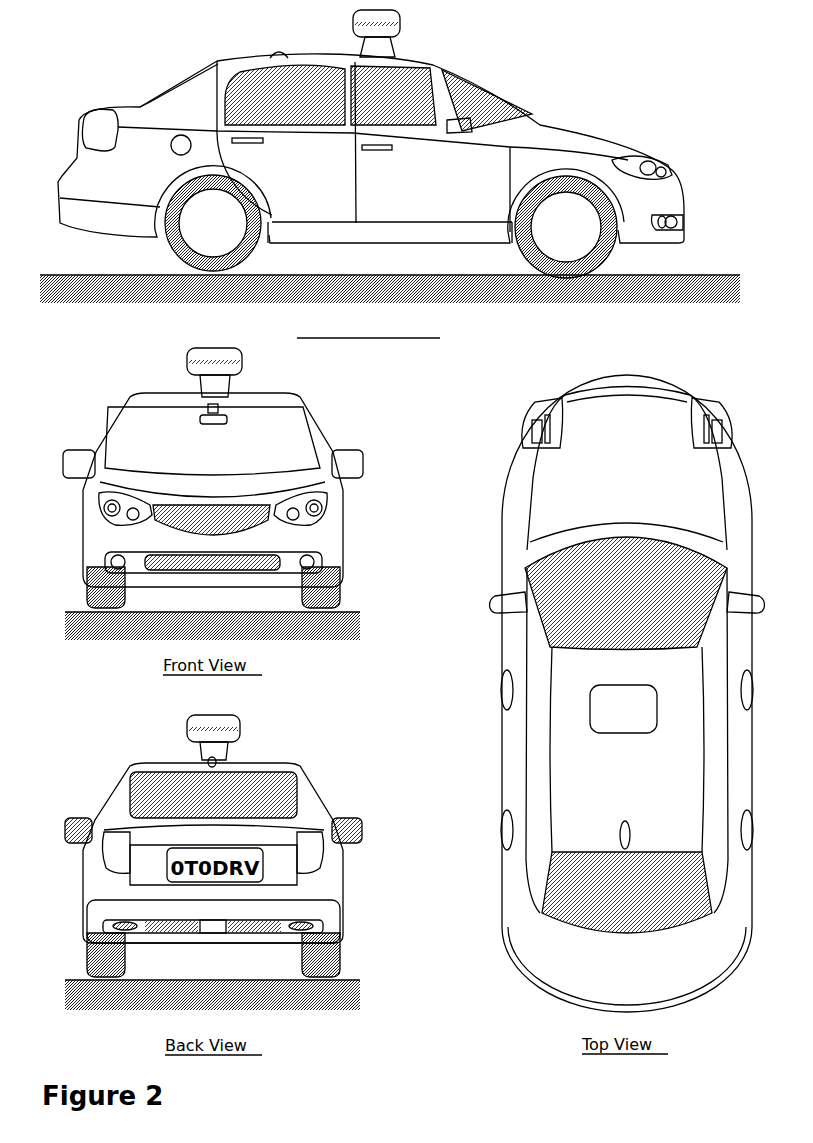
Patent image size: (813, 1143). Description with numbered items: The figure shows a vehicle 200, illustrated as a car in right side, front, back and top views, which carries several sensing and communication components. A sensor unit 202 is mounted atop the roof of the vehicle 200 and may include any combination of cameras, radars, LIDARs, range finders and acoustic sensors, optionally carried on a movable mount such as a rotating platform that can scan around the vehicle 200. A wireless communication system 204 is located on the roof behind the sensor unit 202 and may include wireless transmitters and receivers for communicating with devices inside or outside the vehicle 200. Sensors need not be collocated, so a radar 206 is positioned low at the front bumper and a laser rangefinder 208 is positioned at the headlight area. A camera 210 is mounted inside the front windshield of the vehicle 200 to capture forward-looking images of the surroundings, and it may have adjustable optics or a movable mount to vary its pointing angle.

The vehicle 200 is at (48, 94).
The sensor unit 202 is at (398, 30).
The wireless communication system 204 is at (278, 50).
The radar 206 is at (684, 220).
The laser rangefinder 208 is at (673, 173).
The camera 210 is at (225, 411).